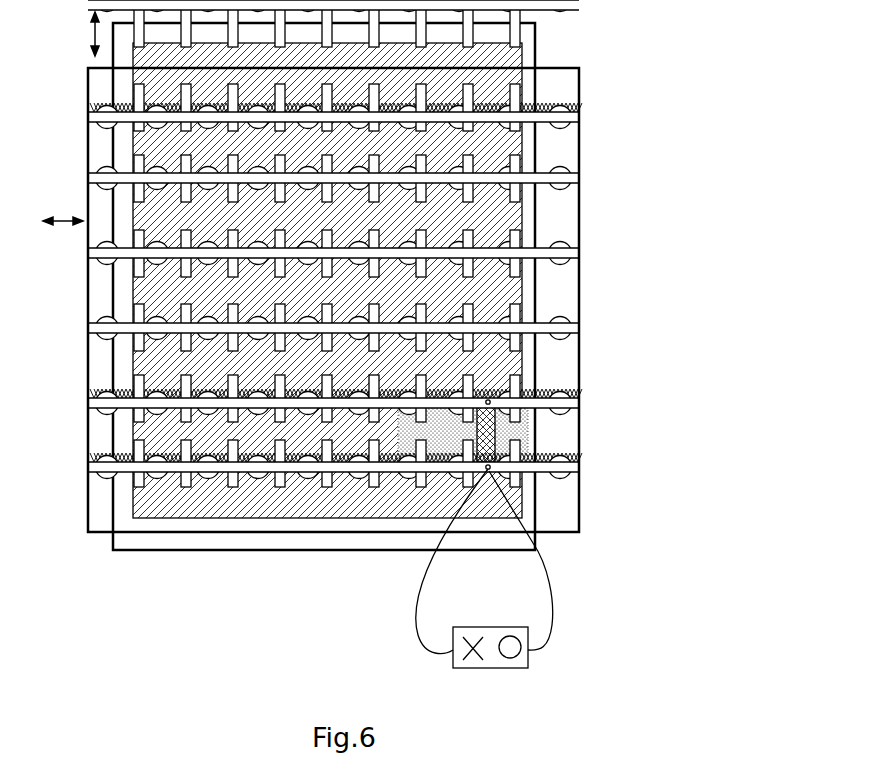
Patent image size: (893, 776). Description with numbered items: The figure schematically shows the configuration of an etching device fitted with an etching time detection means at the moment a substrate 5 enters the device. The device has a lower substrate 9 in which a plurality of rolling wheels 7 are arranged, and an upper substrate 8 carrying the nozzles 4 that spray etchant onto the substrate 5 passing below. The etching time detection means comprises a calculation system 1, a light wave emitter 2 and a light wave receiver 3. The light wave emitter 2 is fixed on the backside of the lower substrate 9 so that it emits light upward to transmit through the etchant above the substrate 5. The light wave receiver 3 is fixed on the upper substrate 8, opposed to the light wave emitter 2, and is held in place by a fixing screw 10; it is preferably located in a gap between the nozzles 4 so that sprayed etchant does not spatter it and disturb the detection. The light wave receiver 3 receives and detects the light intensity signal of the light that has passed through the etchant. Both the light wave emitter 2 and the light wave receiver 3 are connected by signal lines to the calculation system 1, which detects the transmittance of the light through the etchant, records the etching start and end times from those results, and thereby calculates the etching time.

The calculation system 1 is at (465, 640).
The light wave emitter 2 is at (498, 425).
The light wave receiver 3 is at (495, 430).
The nozzle 4 is at (102, 410).
The substrate 5 is at (363, 495).
The rolling wheel 7 is at (138, 383).
The upper substrate of an etching device 8 is at (100, 512).
The lower substrate of an etching device 9 is at (253, 545).
The fixing screw 10 is at (486, 469).